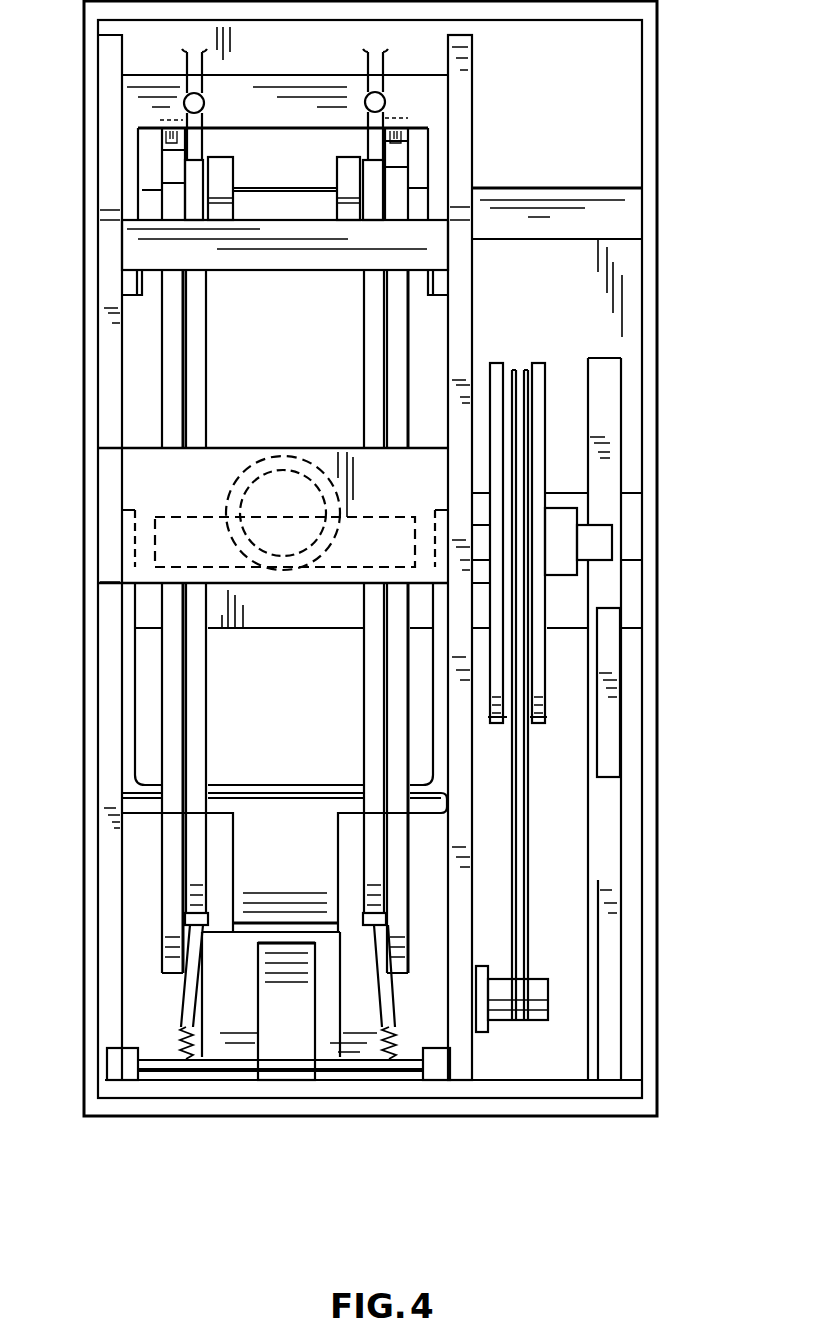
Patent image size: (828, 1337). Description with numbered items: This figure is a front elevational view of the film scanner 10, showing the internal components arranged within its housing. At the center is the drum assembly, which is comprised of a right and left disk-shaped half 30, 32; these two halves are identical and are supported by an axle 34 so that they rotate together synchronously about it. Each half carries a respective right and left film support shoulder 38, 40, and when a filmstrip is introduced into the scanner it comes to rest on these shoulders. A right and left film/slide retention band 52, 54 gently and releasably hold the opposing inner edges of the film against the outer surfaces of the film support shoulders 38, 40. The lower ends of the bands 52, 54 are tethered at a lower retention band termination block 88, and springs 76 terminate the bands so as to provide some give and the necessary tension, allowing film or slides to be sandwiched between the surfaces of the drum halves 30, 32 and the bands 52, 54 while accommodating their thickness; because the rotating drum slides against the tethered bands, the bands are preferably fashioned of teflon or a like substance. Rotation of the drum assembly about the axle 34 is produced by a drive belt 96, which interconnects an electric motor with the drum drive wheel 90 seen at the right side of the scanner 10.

The housing 10 is at (657, 741).
The right disk-shaped half 30 is at (400, 305).
The left disk-shaped half 32 is at (172, 353).
The axle 34 is at (607, 543).
The right film support shoulder 38 is at (373, 358).
The left film support shoulder 40 is at (197, 393).
The right film/slide retention band 52 is at (368, 120).
The left film/slide retention band 54 is at (180, 117).
The springs 76 is at (177, 1050).
The lower retention band termination block 88 is at (233, 1073).
The drum drive wheel 90 is at (545, 450).
The drive belt 96 is at (528, 850).